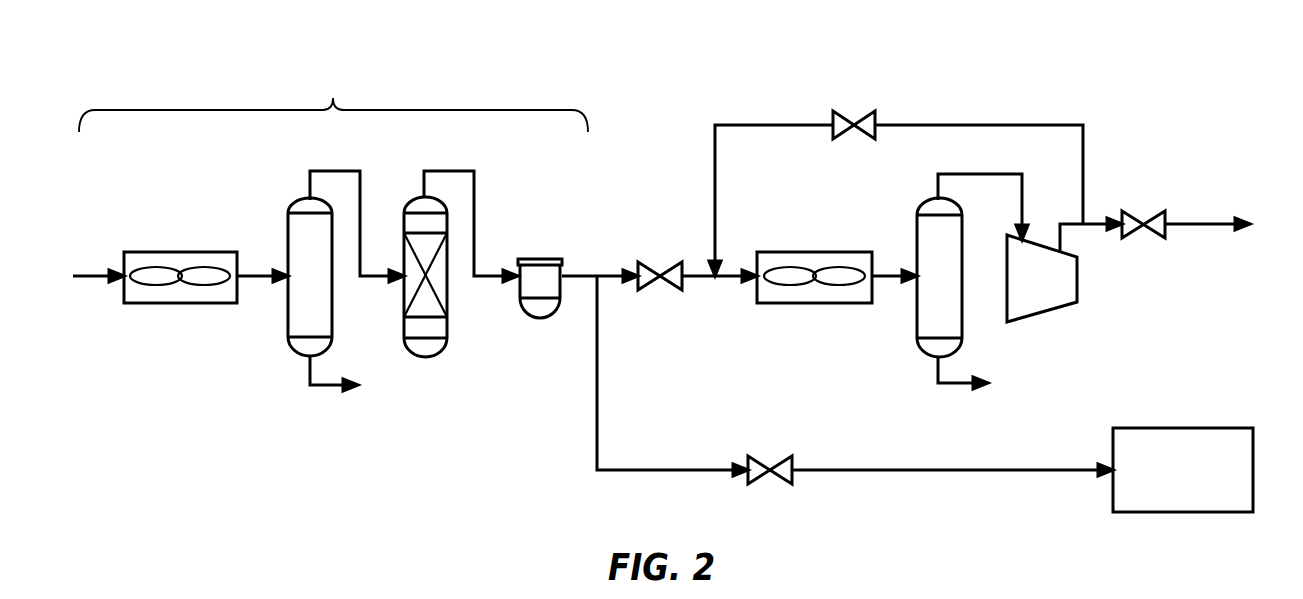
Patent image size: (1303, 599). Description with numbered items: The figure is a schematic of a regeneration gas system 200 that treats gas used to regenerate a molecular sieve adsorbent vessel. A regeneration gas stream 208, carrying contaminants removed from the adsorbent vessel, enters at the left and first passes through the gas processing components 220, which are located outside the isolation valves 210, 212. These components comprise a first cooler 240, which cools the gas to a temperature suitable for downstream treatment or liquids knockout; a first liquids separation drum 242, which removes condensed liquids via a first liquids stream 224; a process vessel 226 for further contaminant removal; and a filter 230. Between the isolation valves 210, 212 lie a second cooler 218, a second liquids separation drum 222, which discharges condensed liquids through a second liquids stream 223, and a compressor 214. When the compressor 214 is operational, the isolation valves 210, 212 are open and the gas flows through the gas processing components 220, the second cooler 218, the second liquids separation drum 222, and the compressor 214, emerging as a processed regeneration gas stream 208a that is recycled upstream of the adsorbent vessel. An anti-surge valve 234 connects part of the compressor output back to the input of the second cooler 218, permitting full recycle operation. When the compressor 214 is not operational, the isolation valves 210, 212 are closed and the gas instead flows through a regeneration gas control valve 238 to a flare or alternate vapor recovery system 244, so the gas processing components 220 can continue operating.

The regeneration gas system 200 is at (1213, 35).
The gas processing components 220 is at (333, 102).
The regeneration gas stream 208 is at (93, 278).
The first cooler 240 is at (193, 250).
The first liquids separation drum 242 is at (288, 323).
The first liquids stream 224 is at (325, 390).
The process vessel 226 is at (404, 323).
The filter 230 is at (535, 315).
The isolation valve 210 is at (667, 264).
The anti-surge valve 234 is at (858, 113).
The second cooler 218 is at (820, 252).
The second liquids separation drum 222 is at (917, 323).
The second liquids stream 223 is at (957, 387).
The compressor 214 is at (1037, 317).
The isolation valve 212 is at (1157, 215).
The processed regeneration gas stream 208a is at (1177, 228).
The regeneration gas control valve 238 is at (780, 460).
The flare system or alternate vapor recovery system 244 is at (1280, 425).